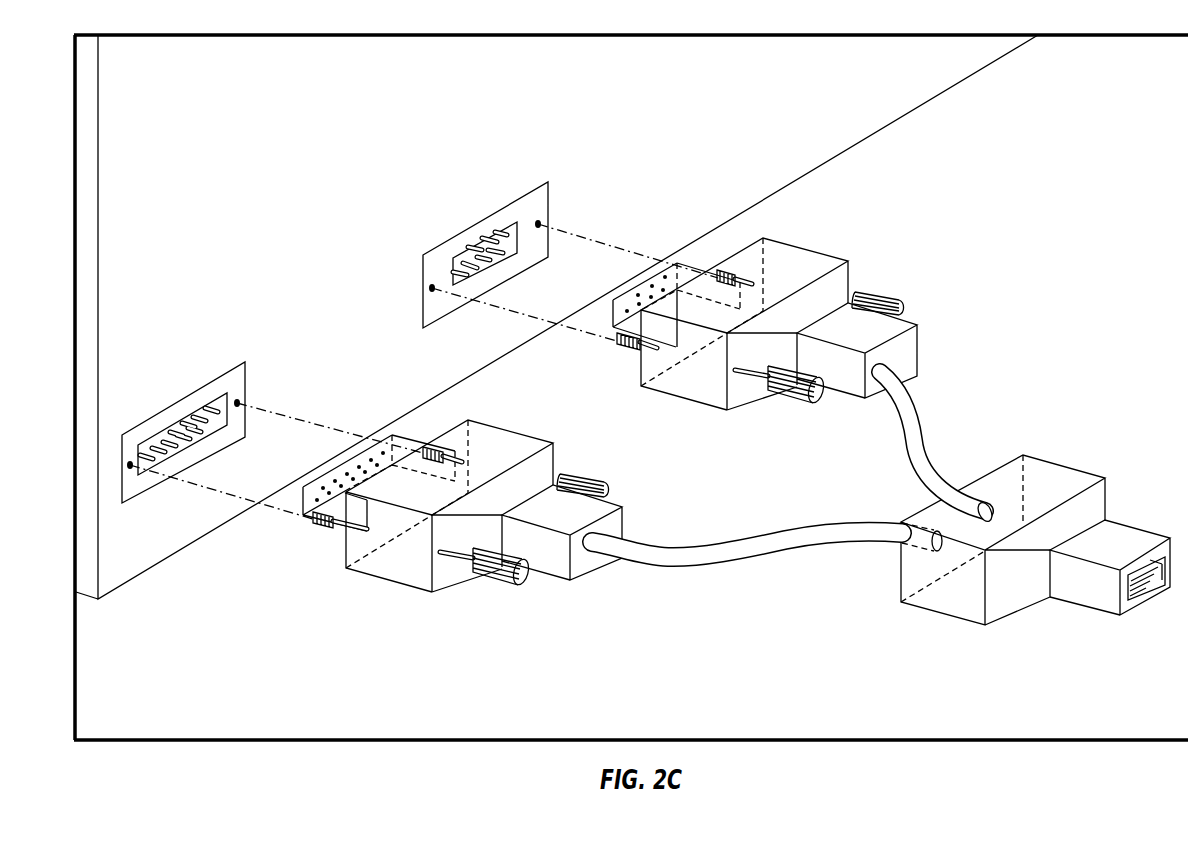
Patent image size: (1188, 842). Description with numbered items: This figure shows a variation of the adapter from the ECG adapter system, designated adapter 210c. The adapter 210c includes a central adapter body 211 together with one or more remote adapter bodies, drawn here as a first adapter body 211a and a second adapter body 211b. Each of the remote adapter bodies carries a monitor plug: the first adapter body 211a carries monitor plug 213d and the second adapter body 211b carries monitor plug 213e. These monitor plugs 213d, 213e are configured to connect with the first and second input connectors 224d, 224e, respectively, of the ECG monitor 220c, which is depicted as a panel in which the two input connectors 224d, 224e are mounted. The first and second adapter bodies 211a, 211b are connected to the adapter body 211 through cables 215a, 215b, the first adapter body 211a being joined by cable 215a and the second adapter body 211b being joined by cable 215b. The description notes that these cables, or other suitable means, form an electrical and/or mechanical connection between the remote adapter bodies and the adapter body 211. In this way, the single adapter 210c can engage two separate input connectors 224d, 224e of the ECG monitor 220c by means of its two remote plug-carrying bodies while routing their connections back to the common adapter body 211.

The adapter 210c is at (736, 418).
The adapter body 211 is at (1063, 476).
The first adapter body 211a is at (765, 311).
The second adapter body 211b is at (462, 490).
The monitor plug 213d is at (694, 268).
The monitor plug 213e is at (410, 442).
The cable 215a is at (927, 428).
The cable 215b is at (767, 522).
The ECG monitor 220c is at (557, 317).
The first input connector 224d is at (486, 242).
The second input connector 224e is at (186, 418).